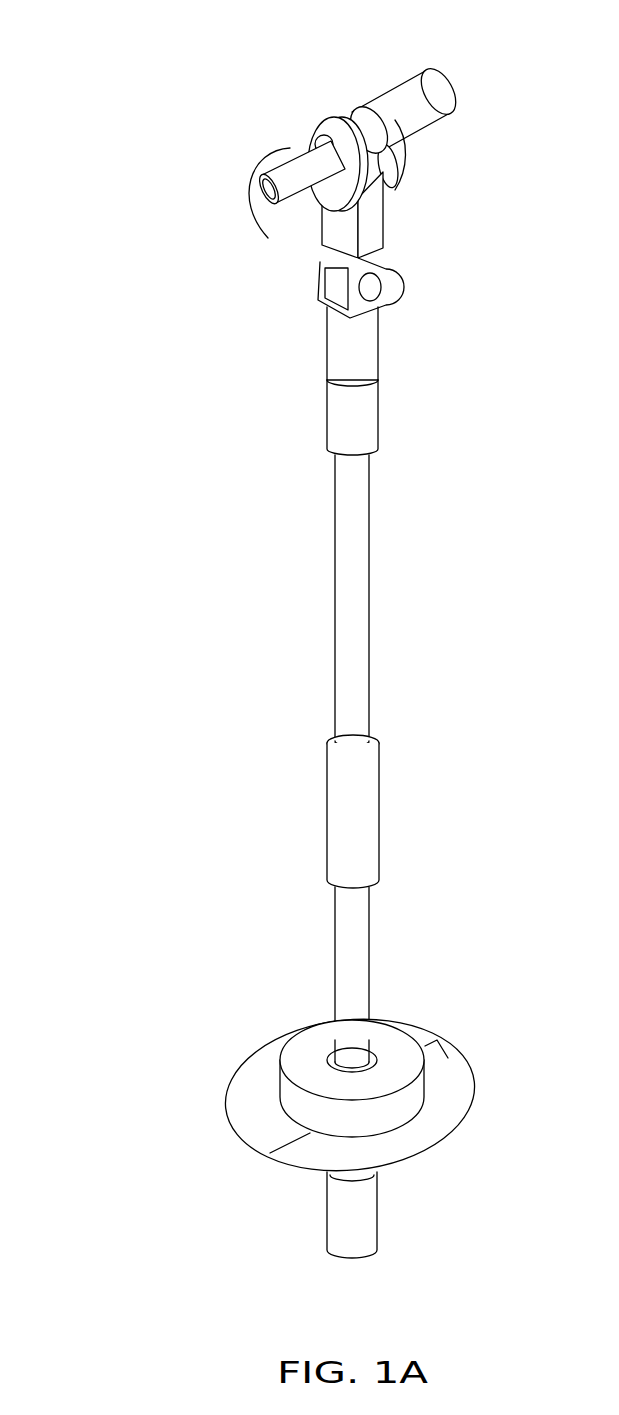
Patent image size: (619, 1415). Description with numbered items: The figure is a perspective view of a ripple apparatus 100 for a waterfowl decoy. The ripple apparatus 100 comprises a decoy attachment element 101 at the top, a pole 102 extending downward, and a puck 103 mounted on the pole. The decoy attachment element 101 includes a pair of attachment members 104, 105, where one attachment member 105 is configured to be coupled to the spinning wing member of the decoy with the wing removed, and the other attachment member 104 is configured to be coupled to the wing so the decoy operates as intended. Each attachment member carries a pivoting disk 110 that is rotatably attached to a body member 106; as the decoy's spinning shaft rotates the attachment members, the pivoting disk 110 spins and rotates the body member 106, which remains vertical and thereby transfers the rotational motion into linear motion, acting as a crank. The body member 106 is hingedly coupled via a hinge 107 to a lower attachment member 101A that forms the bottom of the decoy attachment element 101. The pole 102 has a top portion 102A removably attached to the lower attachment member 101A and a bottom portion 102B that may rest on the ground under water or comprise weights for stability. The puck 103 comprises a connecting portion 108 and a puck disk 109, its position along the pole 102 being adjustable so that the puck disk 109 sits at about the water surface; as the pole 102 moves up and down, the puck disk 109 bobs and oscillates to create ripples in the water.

The ripple apparatus 100 is at (172, 112).
The decoy attachment element 101 is at (463, 73).
The lower attachment member 101A is at (328, 368).
The pole 102 is at (443, 643).
The top portion 102A is at (380, 383).
The bottom portion 102B is at (327, 1247).
The puck 103 is at (618, 1070).
The attachment member 104 is at (302, 194).
The attachment member 105 is at (385, 110).
The body member 106 is at (383, 224).
The hinge 107 is at (387, 294).
The connecting portion 108 is at (312, 1035).
The puck disk 109 is at (228, 1112).
The pivoting disk 110 is at (330, 197).